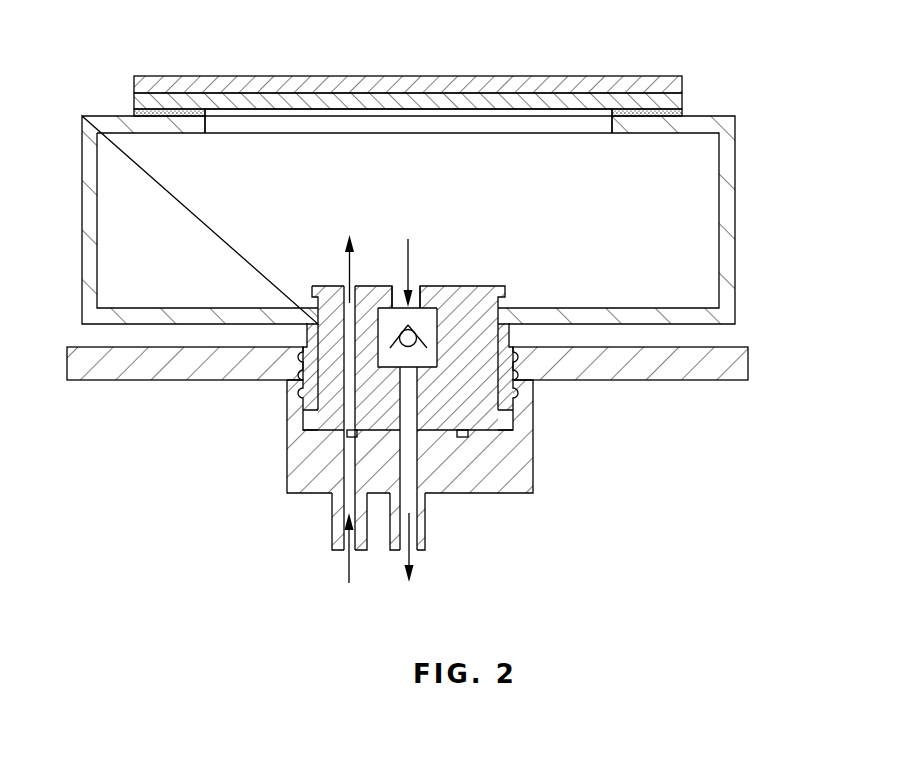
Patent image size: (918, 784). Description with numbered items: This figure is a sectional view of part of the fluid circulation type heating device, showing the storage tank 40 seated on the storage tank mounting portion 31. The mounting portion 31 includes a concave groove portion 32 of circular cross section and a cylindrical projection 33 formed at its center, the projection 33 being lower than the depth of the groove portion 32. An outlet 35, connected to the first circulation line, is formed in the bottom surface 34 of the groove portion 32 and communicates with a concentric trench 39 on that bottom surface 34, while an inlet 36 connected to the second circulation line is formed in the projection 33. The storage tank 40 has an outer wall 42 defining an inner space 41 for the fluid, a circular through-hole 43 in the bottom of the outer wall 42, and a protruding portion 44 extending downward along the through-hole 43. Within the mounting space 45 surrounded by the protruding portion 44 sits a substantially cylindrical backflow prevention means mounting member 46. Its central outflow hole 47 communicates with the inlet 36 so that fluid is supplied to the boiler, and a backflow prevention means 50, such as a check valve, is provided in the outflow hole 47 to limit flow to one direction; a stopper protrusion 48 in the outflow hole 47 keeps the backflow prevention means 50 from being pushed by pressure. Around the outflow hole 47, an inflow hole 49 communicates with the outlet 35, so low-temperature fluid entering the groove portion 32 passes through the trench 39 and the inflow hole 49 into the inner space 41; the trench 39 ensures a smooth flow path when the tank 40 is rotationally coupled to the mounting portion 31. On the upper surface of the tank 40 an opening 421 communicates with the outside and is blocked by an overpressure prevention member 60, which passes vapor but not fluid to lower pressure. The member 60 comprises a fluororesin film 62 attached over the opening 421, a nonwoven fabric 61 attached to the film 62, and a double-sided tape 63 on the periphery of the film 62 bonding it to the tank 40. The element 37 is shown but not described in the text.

The storage tank mounting portion 31 is at (142, 388).
The concave groove portion 32 is at (335, 412).
The projection 33 is at (427, 407).
The bottom surface 34 is at (333, 433).
The outlet 35 is at (333, 493).
The inlet 36 is at (412, 458).
The left nut 37 is at (303, 385).
The trench 39 is at (463, 440).
The storage tank 40 is at (490, 164).
The inner space 41 is at (565, 178).
The outer wall 42 is at (727, 177).
The opening 421 is at (352, 124).
The through-hole 43 is at (493, 322).
The protruding portion 44 is at (510, 385).
The mounting space 45 is at (397, 353).
The backflow prevention means mounting member 46 is at (327, 340).
The outflow hole 47 is at (384, 318).
The stopper protrusion 48 is at (434, 318).
The inflow hole 49 is at (350, 330).
The backflow prevention means 50 is at (416, 318).
The overpressure prevention member 60 is at (476, 73).
The nonwoven fabric 61 is at (673, 85).
The fluororesin film 62 is at (673, 100).
The double-sided tape 63 is at (673, 113).